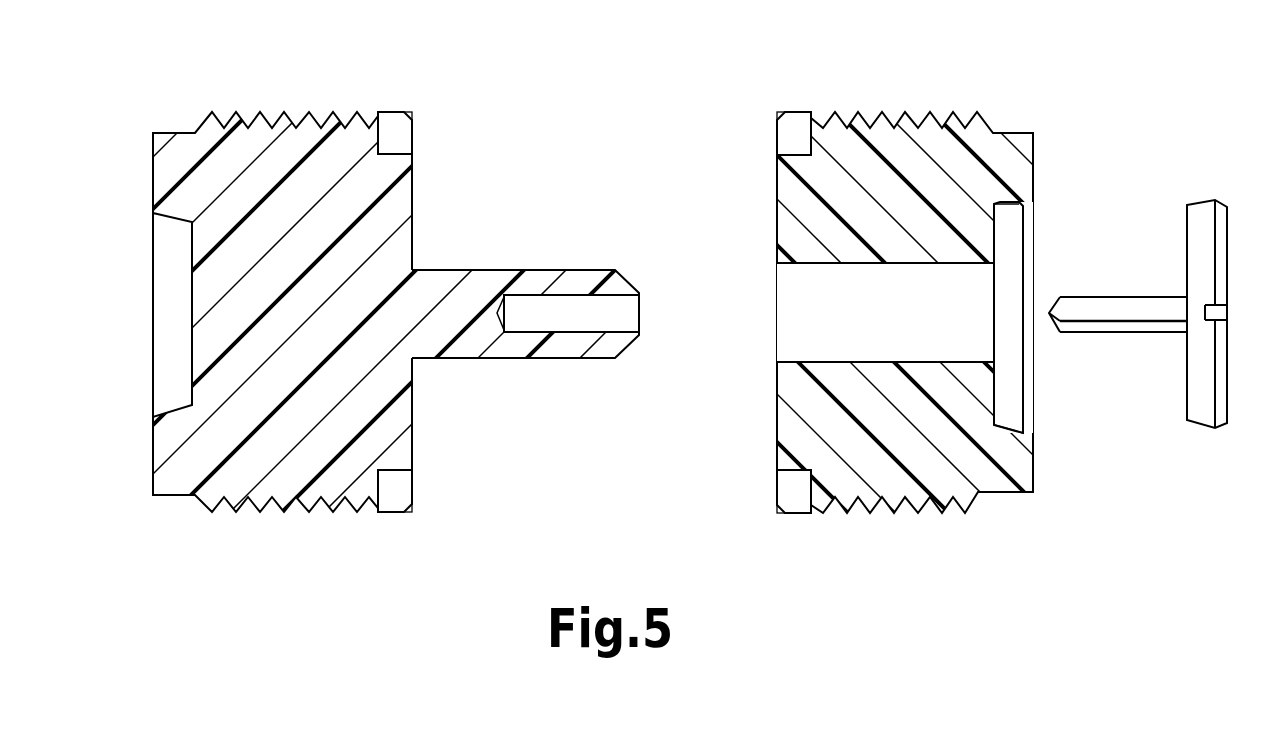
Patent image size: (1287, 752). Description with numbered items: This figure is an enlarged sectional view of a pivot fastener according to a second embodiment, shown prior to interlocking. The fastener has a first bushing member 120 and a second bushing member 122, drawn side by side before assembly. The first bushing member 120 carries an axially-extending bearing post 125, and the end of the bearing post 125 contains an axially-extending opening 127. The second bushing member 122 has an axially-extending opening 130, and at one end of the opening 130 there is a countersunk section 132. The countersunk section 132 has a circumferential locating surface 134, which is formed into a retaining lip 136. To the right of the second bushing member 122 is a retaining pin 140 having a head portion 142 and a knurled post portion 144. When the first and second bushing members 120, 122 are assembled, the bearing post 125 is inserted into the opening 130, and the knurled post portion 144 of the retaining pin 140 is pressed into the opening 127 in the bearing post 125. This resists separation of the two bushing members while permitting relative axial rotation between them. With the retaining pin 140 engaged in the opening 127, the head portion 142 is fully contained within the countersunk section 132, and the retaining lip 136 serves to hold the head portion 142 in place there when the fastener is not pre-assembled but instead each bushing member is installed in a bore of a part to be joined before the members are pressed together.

The first bushing member 120 is at (286, 97).
The second bushing member 122 is at (897, 97).
The bearing post 125 is at (530, 268).
The axially-extending opening 127 is at (581, 322).
The axially-extending opening 130 is at (873, 327).
The countersunk section 132 is at (1018, 282).
The circumferential locating surface 134 is at (1012, 207).
The retaining lip 136 is at (1020, 428).
The retaining pin 140 is at (1123, 290).
The head portion 142 is at (1219, 246).
The knurled post portion 144 is at (1145, 323).